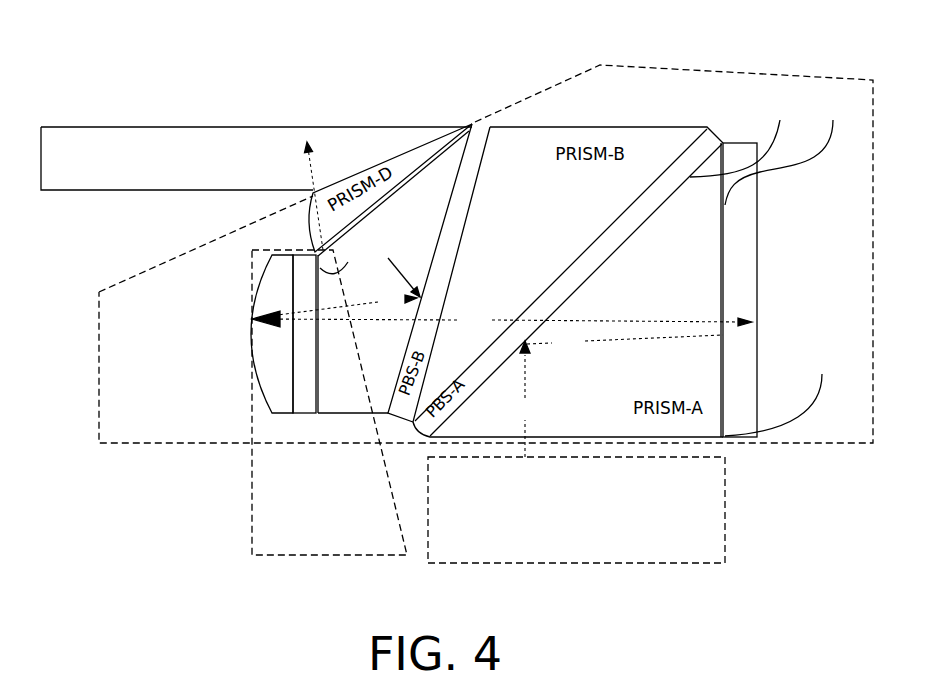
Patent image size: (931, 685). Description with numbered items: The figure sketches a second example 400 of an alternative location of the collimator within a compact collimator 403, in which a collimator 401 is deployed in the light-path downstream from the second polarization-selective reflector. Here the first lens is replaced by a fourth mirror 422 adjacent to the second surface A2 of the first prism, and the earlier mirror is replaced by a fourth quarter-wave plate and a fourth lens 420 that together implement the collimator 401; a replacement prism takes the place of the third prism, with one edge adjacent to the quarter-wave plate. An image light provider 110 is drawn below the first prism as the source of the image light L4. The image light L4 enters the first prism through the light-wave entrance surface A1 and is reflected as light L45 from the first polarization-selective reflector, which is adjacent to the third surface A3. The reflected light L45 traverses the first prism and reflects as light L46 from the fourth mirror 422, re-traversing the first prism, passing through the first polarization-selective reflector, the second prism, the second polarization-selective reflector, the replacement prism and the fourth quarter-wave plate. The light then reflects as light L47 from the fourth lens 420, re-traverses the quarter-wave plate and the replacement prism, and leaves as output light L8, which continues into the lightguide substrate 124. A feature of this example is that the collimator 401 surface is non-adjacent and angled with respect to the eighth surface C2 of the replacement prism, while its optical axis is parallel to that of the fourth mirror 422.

The second example 400 is at (418, 101).
The lightguide substrate 124 is at (256, 158).
The fourth lens 420 is at (273, 334).
The fourth mirror 422 is at (741, 290).
The compact collimator 403 is at (254, 335).
The collimator 401 is at (329, 402).
The image light provider 110 is at (576, 510).
The reflected light L46 is at (502, 320).
The reflected light L47 is at (339, 304).
The reflected light L45 is at (625, 341).
The image light L4 is at (523, 399).
The output light L8 is at (395, 267).
The eighth surface C2 is at (339, 255).
The light-wave entrance surface A1 is at (779, 394).
The second surface A2 is at (784, 153).
The third surface A3 is at (739, 139).